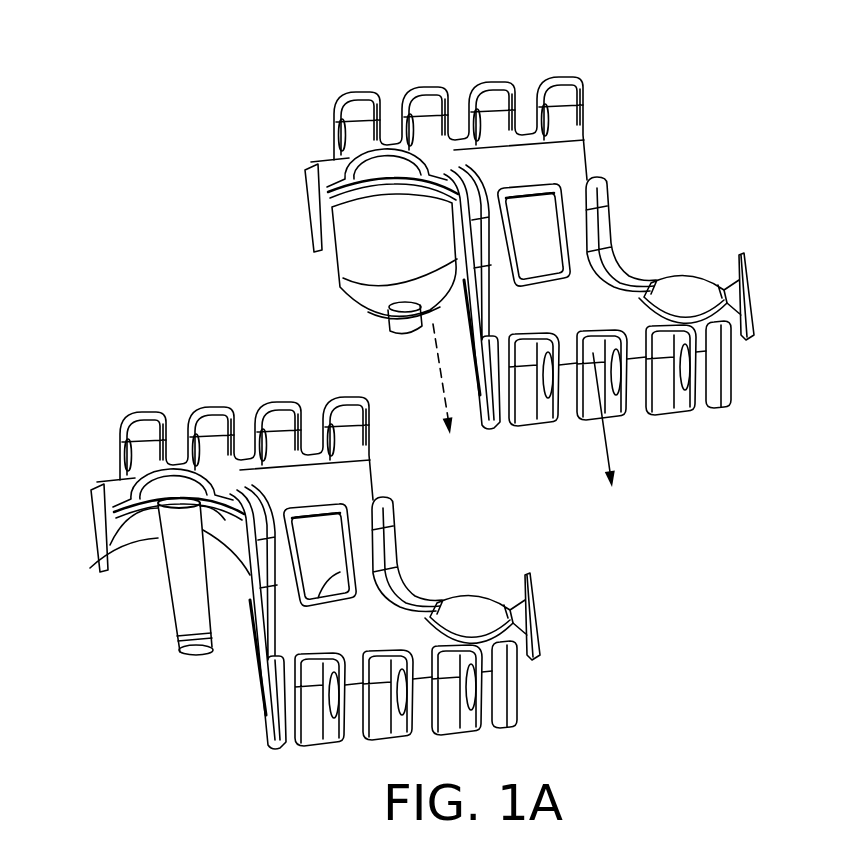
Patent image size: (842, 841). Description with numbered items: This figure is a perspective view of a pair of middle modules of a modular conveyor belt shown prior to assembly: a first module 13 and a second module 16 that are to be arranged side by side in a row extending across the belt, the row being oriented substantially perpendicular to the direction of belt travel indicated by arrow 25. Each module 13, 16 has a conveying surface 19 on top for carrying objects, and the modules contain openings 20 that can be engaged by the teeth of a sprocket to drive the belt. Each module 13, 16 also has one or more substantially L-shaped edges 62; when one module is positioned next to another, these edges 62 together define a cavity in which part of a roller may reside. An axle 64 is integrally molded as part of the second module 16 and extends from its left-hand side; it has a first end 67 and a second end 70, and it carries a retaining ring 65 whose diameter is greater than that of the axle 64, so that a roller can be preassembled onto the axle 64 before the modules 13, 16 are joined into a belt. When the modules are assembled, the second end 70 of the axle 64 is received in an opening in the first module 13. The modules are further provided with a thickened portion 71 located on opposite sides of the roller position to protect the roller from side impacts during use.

The first module 13 is at (127, 485).
The second module 16 is at (573, 157).
The conveying surface 19 is at (314, 494).
The openings 20 is at (302, 606).
The arrow 25 is at (605, 426).
The "L" shaped edge 62 is at (521, 572).
The axle 64 is at (187, 605).
The retaining ring 65 is at (190, 657).
The first end 67 is at (140, 537).
The second end 70 is at (207, 656).
The thickened portion 71 is at (476, 612).